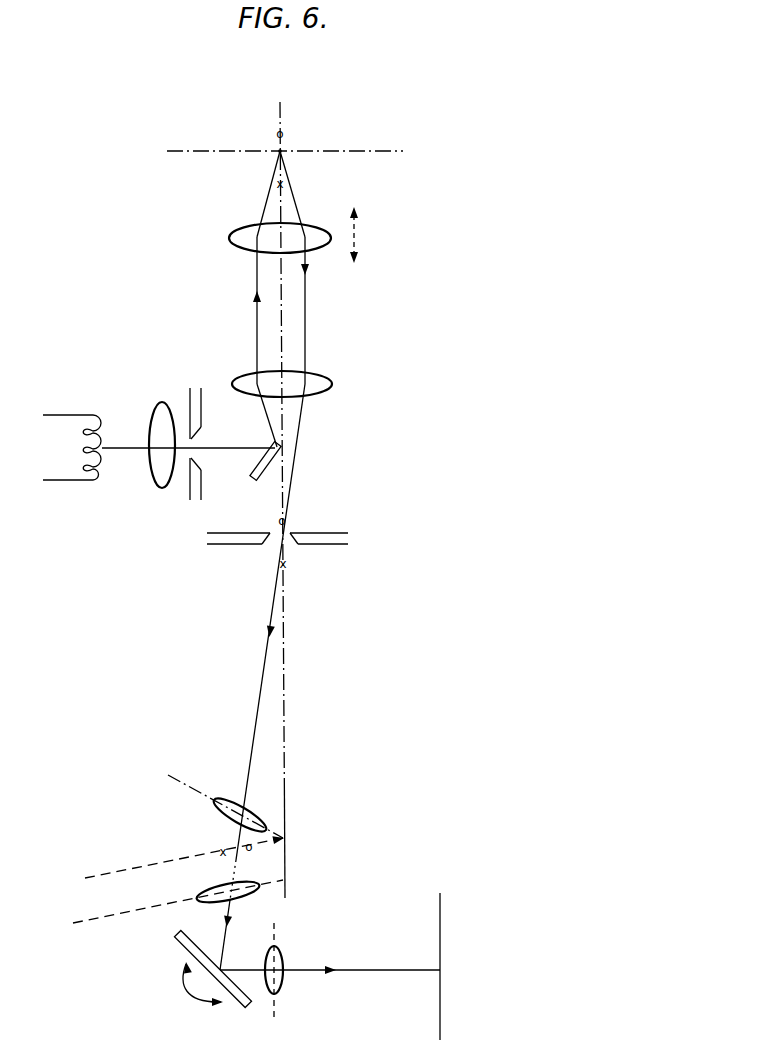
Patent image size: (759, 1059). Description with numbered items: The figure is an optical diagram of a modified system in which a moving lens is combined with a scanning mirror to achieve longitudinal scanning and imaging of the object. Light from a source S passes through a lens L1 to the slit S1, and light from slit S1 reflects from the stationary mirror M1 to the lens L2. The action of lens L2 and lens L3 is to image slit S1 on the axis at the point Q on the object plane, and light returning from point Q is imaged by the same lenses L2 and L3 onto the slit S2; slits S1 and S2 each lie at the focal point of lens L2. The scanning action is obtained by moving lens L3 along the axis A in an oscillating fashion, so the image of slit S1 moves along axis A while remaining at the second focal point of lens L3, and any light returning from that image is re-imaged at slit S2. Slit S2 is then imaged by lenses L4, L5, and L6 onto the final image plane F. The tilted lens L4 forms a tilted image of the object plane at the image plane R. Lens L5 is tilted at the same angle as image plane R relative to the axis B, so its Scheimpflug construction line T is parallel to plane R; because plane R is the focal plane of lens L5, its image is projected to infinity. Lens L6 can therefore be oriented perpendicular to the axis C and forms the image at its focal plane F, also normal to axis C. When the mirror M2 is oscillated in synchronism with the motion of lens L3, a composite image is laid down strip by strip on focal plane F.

The point on the object plane Q is at (286, 148).
The oscillating lens L3 is at (237, 229).
The axis A is at (287, 314).
The lens L2 is at (331, 376).
The light source S is at (95, 412).
The lens L1 (condenser) L1 is at (160, 402).
The slit S1 is at (201, 438).
The stationary mirror M1 is at (253, 462).
The slit S2 is at (291, 530).
The axis B is at (257, 700).
The tilted lens L4 is at (229, 793).
The image plane R is at (173, 855).
The Scheimpflug construction line T is at (113, 907).
The lens L5 is at (253, 877).
The mirror M2 is at (237, 979).
The lens L6 is at (283, 986).
The axis C is at (357, 974).
The final image plane F is at (437, 941).